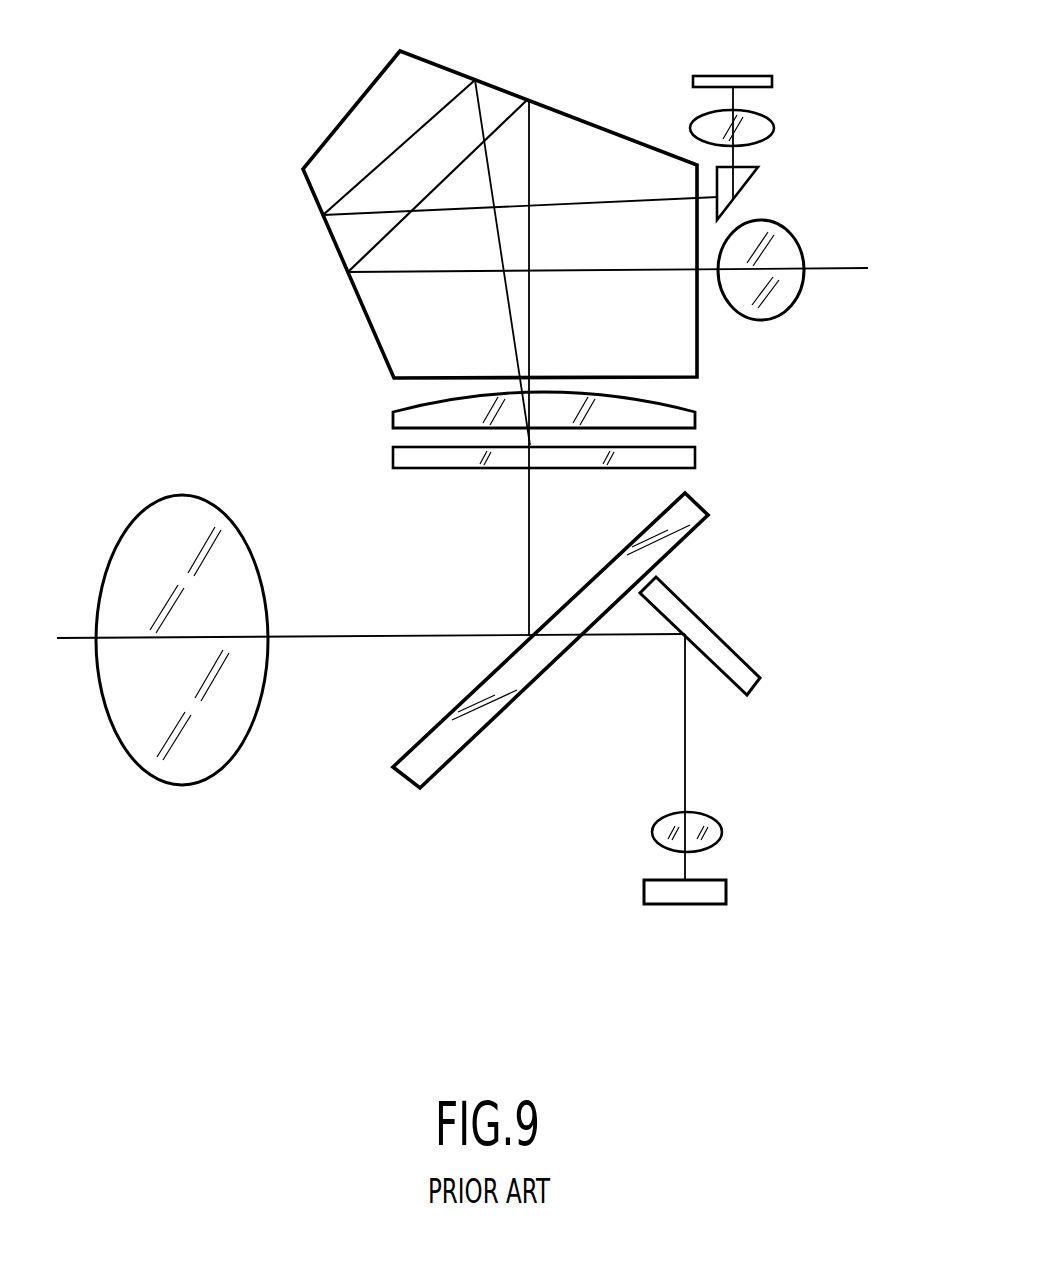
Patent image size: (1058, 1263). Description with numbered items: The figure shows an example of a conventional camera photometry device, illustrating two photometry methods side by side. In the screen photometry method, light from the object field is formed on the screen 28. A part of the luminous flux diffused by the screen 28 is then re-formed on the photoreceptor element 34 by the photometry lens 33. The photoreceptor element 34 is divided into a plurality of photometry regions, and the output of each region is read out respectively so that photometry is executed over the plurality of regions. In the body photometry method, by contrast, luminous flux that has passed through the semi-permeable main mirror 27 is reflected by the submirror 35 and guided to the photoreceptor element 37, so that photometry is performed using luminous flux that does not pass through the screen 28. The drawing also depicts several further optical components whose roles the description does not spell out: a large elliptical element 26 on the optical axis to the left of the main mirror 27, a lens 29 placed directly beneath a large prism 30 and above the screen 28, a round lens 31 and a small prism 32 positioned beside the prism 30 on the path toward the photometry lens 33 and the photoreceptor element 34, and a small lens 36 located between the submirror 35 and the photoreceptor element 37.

The concave mirror 26 is at (220, 768).
The semi-permeable main mirror 27 is at (528, 688).
The screen 28 is at (697, 457).
The lens 29 is at (697, 413).
The prism 30 is at (473, 77).
The lens 31 is at (803, 283).
The prism 32 is at (753, 180).
The photometry lens 33 is at (773, 124).
The photoreceptor element 34 is at (737, 75).
The submirror 35 is at (715, 633).
The lens 36 is at (722, 827).
The photoreceptor element 37 is at (727, 888).